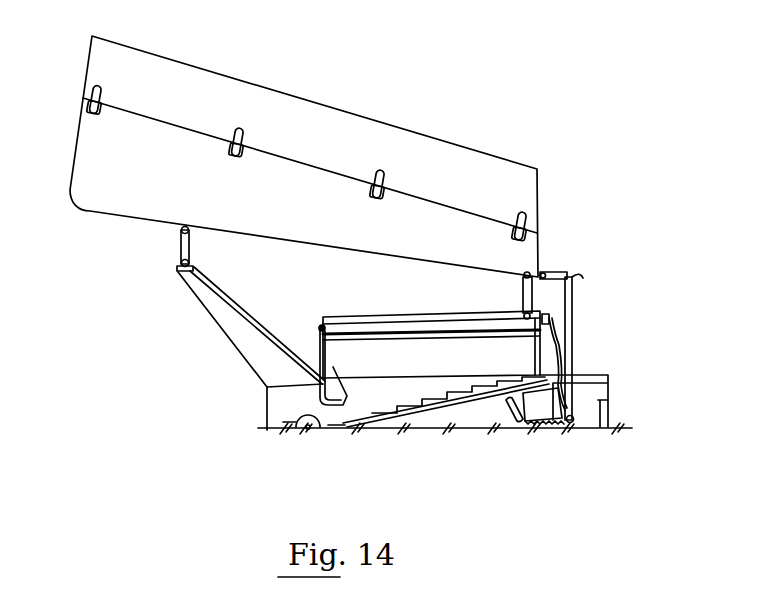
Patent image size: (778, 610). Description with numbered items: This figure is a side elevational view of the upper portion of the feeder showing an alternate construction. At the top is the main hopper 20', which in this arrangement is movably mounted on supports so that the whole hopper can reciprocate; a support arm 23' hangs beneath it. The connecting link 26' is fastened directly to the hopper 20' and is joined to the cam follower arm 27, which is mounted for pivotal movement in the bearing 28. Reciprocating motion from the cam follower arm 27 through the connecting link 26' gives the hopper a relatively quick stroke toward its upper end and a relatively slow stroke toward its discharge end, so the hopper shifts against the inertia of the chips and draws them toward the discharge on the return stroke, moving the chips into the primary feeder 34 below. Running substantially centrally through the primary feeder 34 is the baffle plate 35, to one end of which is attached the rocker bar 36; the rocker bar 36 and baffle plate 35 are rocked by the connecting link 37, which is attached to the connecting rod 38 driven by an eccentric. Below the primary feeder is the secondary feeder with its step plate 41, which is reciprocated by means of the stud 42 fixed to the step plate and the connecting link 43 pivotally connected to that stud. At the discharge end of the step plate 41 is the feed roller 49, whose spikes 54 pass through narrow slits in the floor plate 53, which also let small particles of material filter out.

The main hopper 20' is at (288, 156).
The support arm 23' is at (251, 348).
The connecting link 26' is at (562, 259).
The cam follower arm 27 is at (573, 316).
The bearing 28 is at (573, 419).
The primary feeder 34 is at (360, 315).
The baffle plate 35 is at (383, 329).
The rocker bar 36 is at (319, 349).
The connecting link 37 is at (546, 314).
The connecting rod 38 is at (559, 344).
The step plate 41 is at (400, 412).
The stud 42 is at (543, 406).
The connecting link 43 is at (509, 406).
The feed roller 49 is at (298, 423).
The floor plate 53 is at (333, 423).
The spikes 54 is at (306, 414).